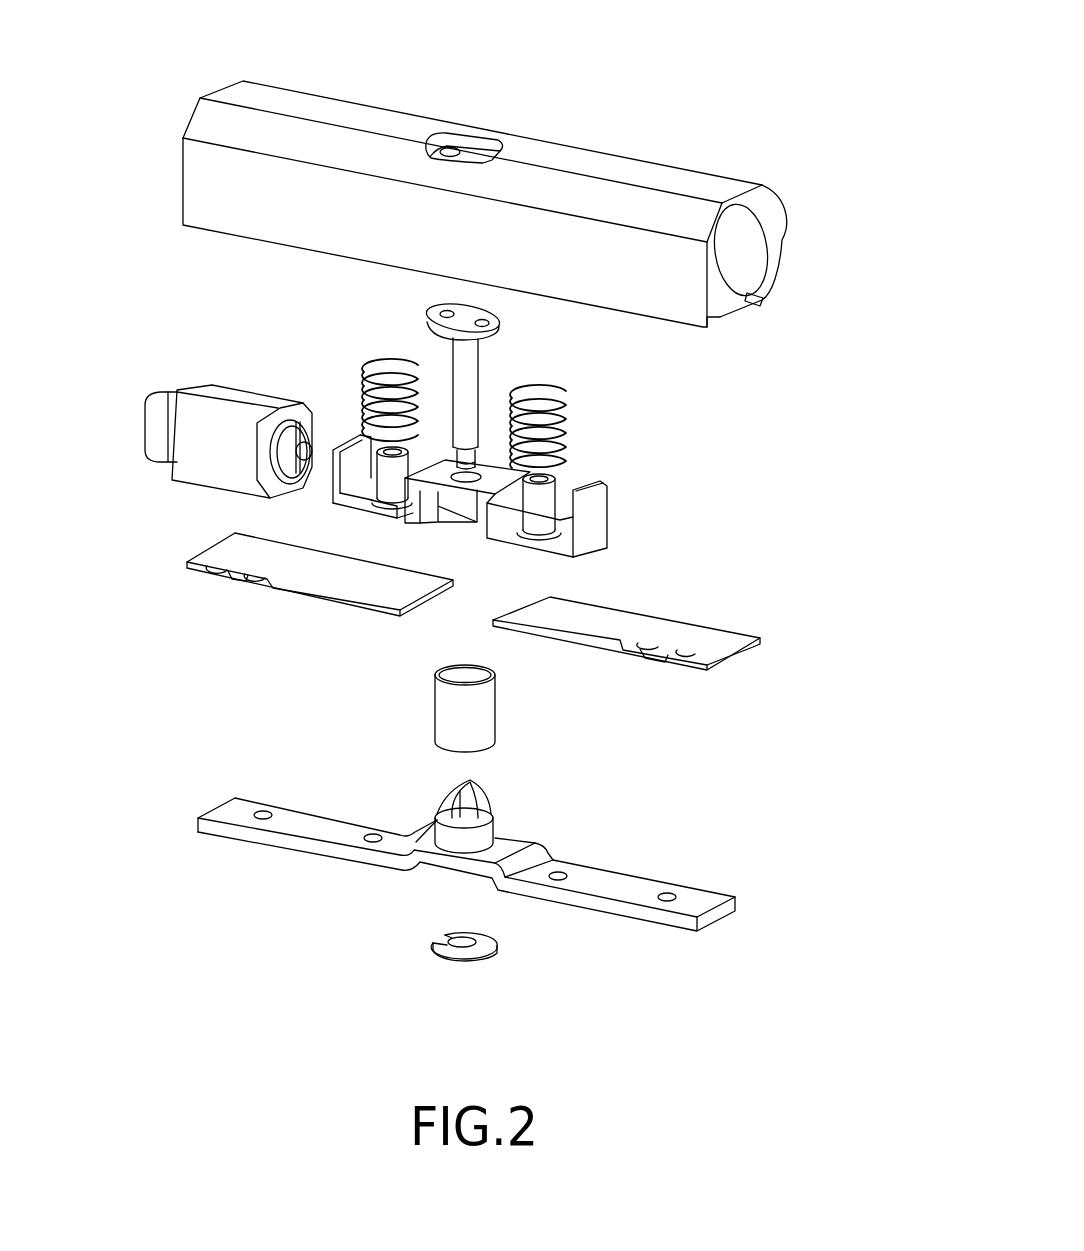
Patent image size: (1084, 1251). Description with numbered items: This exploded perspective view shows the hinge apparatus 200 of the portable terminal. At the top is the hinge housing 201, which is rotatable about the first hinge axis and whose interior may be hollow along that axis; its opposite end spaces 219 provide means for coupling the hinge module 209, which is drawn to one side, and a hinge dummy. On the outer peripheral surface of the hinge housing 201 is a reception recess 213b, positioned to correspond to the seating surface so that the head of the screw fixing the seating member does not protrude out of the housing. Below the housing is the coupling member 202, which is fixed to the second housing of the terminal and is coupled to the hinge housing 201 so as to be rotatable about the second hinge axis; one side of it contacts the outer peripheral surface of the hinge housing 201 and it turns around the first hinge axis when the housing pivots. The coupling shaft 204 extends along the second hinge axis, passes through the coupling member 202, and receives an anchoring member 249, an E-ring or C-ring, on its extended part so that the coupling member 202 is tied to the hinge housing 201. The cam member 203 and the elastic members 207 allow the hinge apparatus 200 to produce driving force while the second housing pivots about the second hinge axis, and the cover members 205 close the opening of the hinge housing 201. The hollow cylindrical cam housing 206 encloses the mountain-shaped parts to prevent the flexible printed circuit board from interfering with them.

The hinge apparatus 200 is at (320, 33).
The hinge housing 201 is at (518, 186).
The coupling member 202 is at (652, 868).
The cam member 203 is at (620, 488).
The coupling shaft 204 is at (487, 360).
The cover members 205 is at (192, 545).
The cam housing 206 is at (512, 703).
The elastic members 207 is at (373, 375).
The hinge module 209 is at (155, 388).
The reception recess 213b is at (465, 152).
The opposite end spaces 219 is at (750, 245).
The anchoring member 249 is at (497, 944).